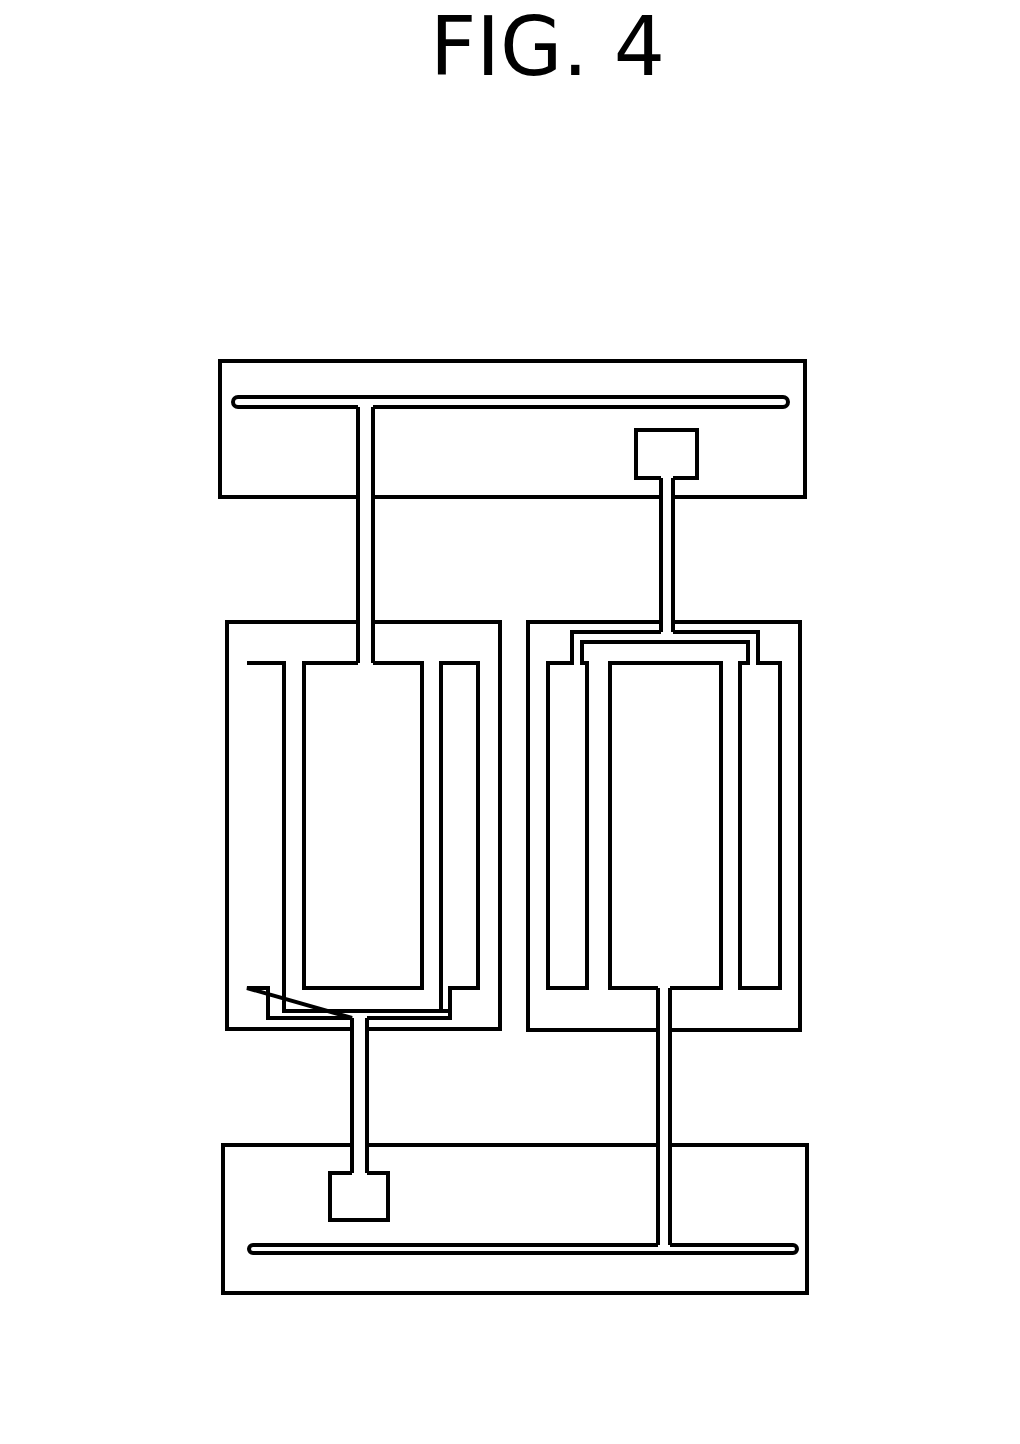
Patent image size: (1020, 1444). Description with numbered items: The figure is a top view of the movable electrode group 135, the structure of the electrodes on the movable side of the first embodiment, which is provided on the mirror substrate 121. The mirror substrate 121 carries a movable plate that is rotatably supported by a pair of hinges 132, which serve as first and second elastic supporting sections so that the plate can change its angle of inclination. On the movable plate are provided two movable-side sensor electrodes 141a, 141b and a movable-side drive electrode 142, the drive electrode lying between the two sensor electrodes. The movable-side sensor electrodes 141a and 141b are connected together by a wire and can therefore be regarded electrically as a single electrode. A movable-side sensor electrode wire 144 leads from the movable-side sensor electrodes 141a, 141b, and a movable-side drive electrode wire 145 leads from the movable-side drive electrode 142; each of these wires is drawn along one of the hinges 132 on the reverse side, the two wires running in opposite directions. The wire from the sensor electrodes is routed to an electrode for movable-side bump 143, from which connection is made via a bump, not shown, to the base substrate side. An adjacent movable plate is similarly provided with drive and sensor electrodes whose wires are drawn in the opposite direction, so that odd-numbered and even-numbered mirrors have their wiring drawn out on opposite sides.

The mirror substrate 121 is at (673, 361).
The hinge 132 is at (347, 550).
The movable electrode group 135 is at (213, 807).
The movable-side sensor electrode 141a is at (263, 692).
The movable-side sensor electrode 141b is at (462, 692).
The movable-side drive electrode 142 is at (348, 953).
The electrode for movable-side bump 143 is at (365, 1195).
The movable-side sensor electrode wire 144 is at (358, 1085).
The movable-side drive electrode wire 145 is at (367, 458).